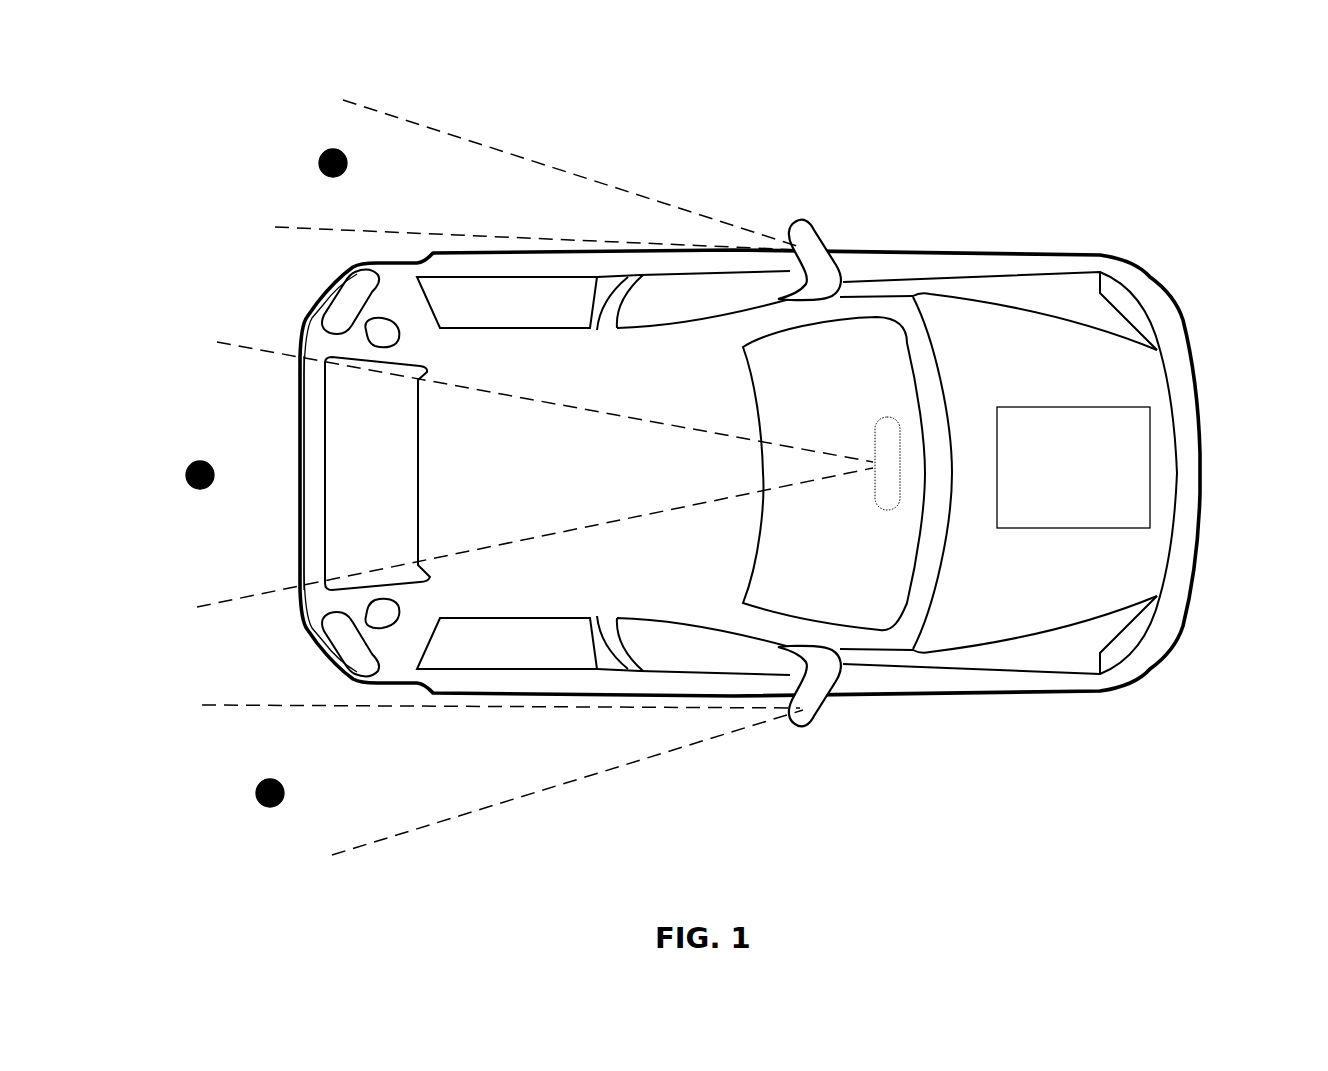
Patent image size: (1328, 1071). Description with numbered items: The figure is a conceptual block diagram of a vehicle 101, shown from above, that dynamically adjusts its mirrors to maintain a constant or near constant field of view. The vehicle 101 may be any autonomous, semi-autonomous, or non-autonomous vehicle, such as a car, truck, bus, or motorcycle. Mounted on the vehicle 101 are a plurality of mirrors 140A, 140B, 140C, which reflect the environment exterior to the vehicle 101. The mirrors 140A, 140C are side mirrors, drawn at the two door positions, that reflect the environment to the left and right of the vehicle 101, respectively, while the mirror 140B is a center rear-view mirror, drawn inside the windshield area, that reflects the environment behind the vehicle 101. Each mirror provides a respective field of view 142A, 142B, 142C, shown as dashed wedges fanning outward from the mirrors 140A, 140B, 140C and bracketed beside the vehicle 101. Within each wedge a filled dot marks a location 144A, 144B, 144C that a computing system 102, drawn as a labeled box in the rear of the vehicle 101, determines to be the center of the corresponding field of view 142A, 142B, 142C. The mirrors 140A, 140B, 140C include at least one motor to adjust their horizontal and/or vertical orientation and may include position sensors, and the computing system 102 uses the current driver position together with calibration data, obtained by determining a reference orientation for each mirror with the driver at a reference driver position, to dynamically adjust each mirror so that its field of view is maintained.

The vehicle 101 is at (1241, 75).
The computing system 102 is at (1060, 504).
The mirror 140A is at (808, 220).
The mirror 140B is at (890, 417).
The mirror 140C is at (818, 717).
The field of view 142A is at (297, 98).
The field of view 142B is at (180, 335).
The field of view 142C is at (237, 723).
The location 144A is at (336, 177).
The location 144B is at (197, 460).
The location 144C is at (280, 780).